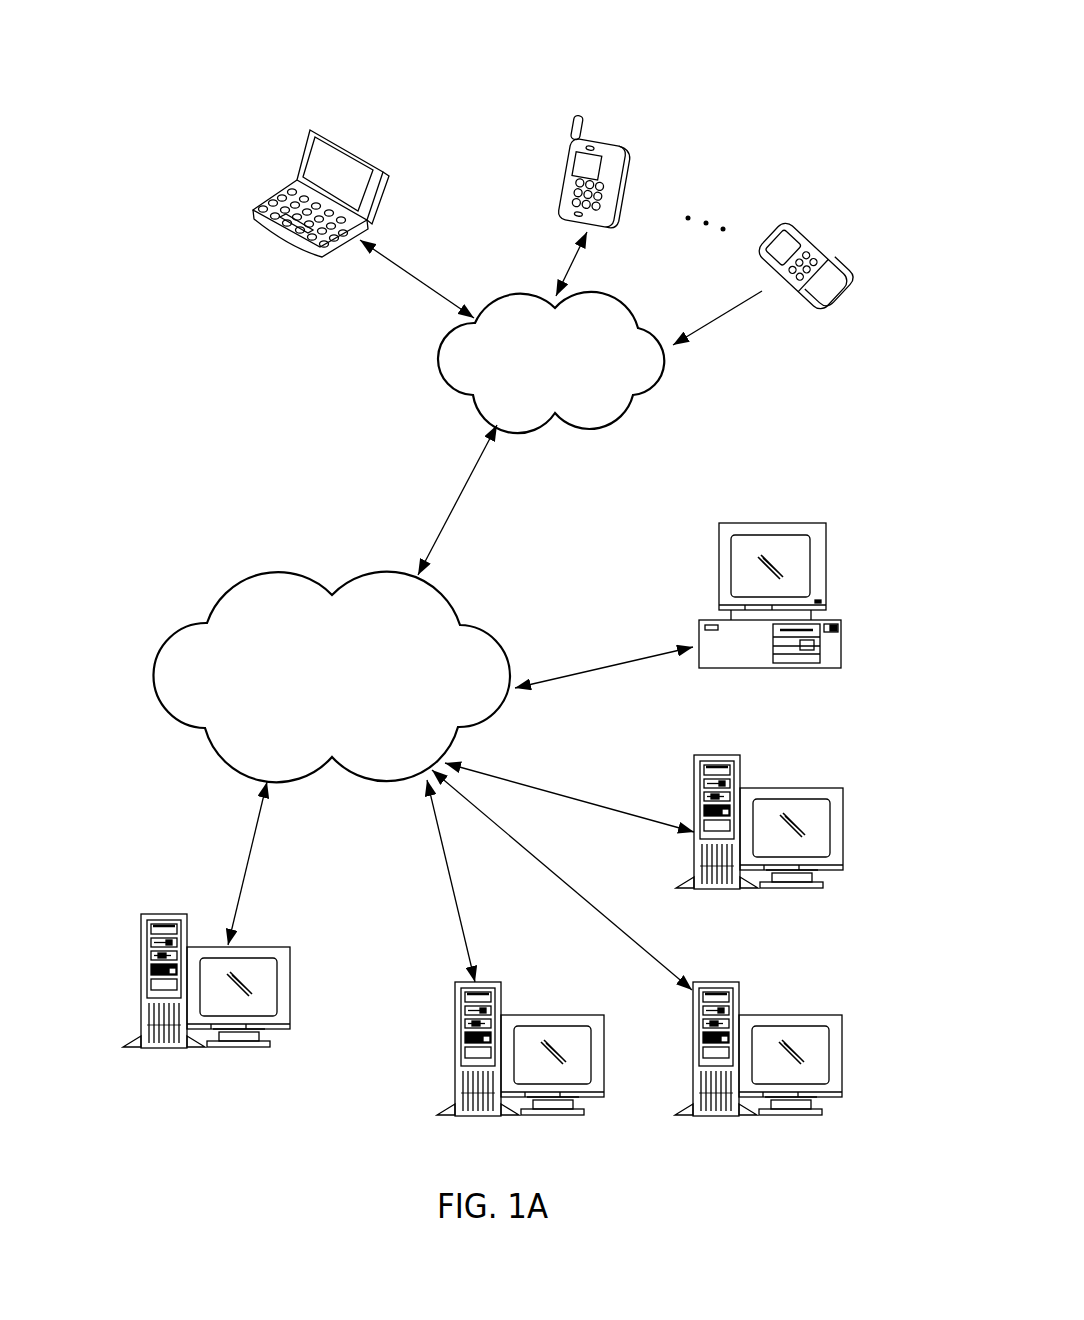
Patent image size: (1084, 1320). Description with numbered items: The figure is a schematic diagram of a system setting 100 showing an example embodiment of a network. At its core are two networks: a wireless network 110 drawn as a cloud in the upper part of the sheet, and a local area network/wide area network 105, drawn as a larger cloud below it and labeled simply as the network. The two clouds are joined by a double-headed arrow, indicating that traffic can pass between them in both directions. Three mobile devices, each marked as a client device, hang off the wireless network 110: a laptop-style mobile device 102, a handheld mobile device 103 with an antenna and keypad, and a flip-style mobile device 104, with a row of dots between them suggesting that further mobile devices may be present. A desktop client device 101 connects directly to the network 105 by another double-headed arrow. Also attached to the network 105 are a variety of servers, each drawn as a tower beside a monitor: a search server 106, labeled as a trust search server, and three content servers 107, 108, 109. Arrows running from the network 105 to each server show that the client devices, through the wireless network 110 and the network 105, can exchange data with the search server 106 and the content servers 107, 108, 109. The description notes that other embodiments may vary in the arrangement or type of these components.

The system setting 100 is at (722, 60).
The client device 101 is at (787, 523).
The mobile device 102 is at (378, 193).
The mobile device 103 is at (626, 170).
The mobile device 104 is at (850, 253).
The local area network/wide area network 105 is at (476, 624).
The search server 106 is at (265, 947).
The content server 107 is at (556, 1015).
The content server 108 is at (795, 1015).
The content server 109 is at (795, 788).
The wireless network 110 is at (633, 405).